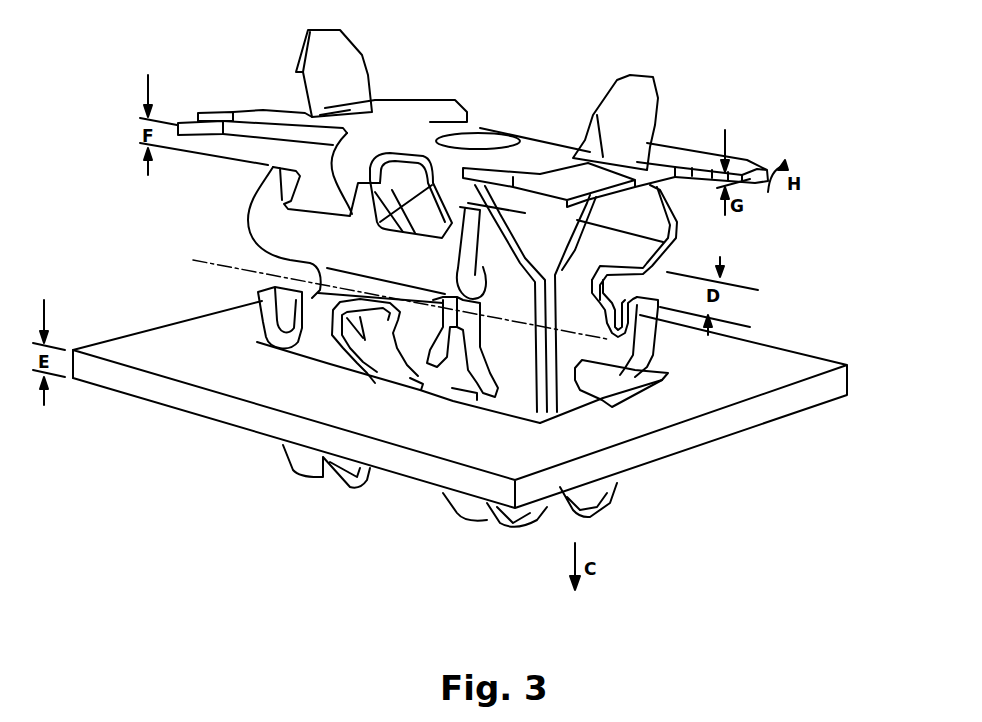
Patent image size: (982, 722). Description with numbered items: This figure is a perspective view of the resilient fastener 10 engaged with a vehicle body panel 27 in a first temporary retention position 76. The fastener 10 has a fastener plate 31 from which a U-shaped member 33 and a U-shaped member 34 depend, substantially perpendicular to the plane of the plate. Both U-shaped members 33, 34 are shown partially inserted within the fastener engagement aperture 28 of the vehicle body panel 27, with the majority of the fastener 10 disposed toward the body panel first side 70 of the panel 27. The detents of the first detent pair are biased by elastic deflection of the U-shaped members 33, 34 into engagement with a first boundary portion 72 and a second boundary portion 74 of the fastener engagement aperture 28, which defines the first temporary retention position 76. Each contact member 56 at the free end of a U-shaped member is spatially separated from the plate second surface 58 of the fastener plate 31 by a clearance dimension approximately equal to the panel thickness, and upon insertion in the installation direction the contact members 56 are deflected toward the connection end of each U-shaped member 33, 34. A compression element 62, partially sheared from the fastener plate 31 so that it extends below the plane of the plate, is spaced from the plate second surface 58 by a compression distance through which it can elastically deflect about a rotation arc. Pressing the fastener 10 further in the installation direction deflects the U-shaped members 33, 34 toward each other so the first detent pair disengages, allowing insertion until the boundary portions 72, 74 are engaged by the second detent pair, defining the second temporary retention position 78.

The resilient fastener 10 is at (486, 128).
The vehicle body panel 27 is at (112, 385).
The fastener engagement aperture 28 is at (603, 397).
The fastener plate 31 is at (678, 150).
The U-shaped member 33 is at (507, 523).
The U-shaped member 34 is at (607, 500).
The contact member 56 is at (270, 177).
The plate second surface 58 is at (686, 177).
The compression element 62 is at (763, 170).
The body panel first side 70 is at (454, 410).
The first boundary portion 72 is at (403, 383).
The second boundary portion 74 is at (638, 377).
The first temporary retention position 76 is at (258, 342).
The second temporary retention position 78 is at (227, 268).